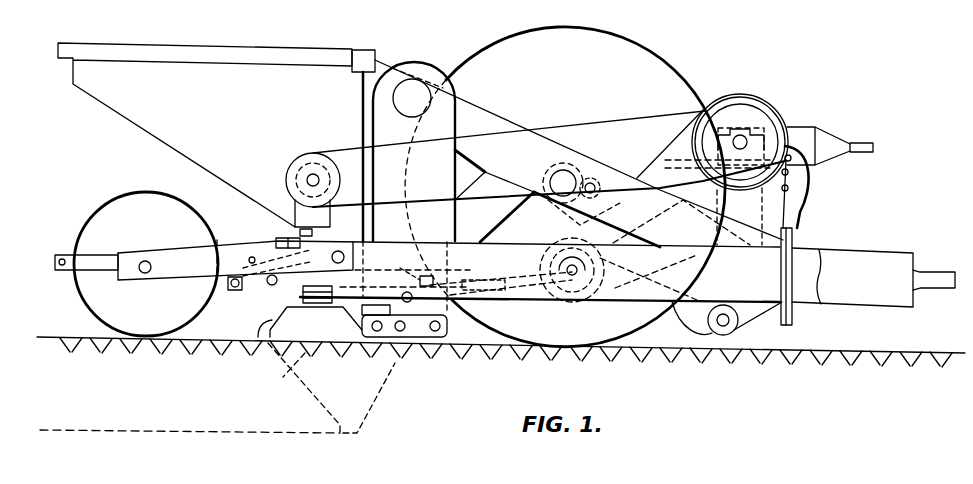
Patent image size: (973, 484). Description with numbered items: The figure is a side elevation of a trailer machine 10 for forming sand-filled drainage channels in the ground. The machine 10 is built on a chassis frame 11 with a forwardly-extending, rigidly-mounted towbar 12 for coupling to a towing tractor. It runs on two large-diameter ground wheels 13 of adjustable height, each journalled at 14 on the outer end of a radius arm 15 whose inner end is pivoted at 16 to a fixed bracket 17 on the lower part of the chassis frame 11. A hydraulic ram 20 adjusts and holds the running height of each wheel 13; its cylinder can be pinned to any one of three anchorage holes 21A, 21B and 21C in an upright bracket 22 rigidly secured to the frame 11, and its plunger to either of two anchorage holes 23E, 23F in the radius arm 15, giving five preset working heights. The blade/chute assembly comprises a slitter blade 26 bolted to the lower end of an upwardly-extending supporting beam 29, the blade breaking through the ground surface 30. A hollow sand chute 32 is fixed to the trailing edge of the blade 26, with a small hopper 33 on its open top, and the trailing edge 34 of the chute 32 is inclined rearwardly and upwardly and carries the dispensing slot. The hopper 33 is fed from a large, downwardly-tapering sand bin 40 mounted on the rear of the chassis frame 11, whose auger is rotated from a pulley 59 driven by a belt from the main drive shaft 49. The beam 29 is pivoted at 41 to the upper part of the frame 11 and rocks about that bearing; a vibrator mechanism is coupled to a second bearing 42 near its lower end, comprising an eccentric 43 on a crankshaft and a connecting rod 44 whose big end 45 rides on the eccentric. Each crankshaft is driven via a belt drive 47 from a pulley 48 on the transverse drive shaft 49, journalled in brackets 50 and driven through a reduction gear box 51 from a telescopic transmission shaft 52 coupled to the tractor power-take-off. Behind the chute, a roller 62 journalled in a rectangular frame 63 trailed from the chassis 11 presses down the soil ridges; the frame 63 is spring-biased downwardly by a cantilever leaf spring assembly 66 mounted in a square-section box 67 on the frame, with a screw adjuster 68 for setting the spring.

The machine 10 is at (687, 70).
The chassis frame 11 is at (512, 118).
The towbar 12 is at (905, 254).
The ground wheels 13 is at (660, 57).
The journal 14 is at (552, 176).
The radius arm 15 is at (622, 224).
The pivot 16 is at (708, 329).
The fixed bracket 17 is at (745, 330).
The hydraulic ram 20 is at (665, 160).
The anchorage hole 21A is at (791, 158).
The anchorage hole 21B is at (788, 173).
The anchorage hole 21C is at (788, 190).
The upright bracket 22 is at (822, 254).
The anchorage hole 23E is at (565, 166).
The anchorage hole 23F is at (618, 205).
The slitter blade 26 is at (375, 392).
The supporting beam 29 is at (437, 118).
The ground surface 30 is at (218, 337).
The sand chute 32 is at (217, 388).
The hopper 33 is at (258, 337).
The trailing edge 34 is at (612, 197).
The sand bin 40 is at (122, 105).
The bearing 41 is at (413, 79).
The second bearing 42 is at (388, 340).
The eccentric 43 is at (572, 284).
The connecting rod 44 is at (513, 287).
The big end 45 is at (586, 285).
The belt drive 47 is at (672, 140).
The pulley 48 is at (740, 103).
The drive shaft 49 is at (744, 139).
The bracket 50 is at (770, 276).
The reduction gear box 51 is at (806, 127).
The telescopic transmission shaft 52 is at (862, 143).
The pulley 59 is at (300, 158).
The roller 62 is at (108, 200).
The rectangular frame 63 is at (235, 248).
The cantilever leaf spring assembly 66 is at (253, 264).
The square-section box 67 is at (316, 311).
The screw adjuster 68 is at (417, 272).